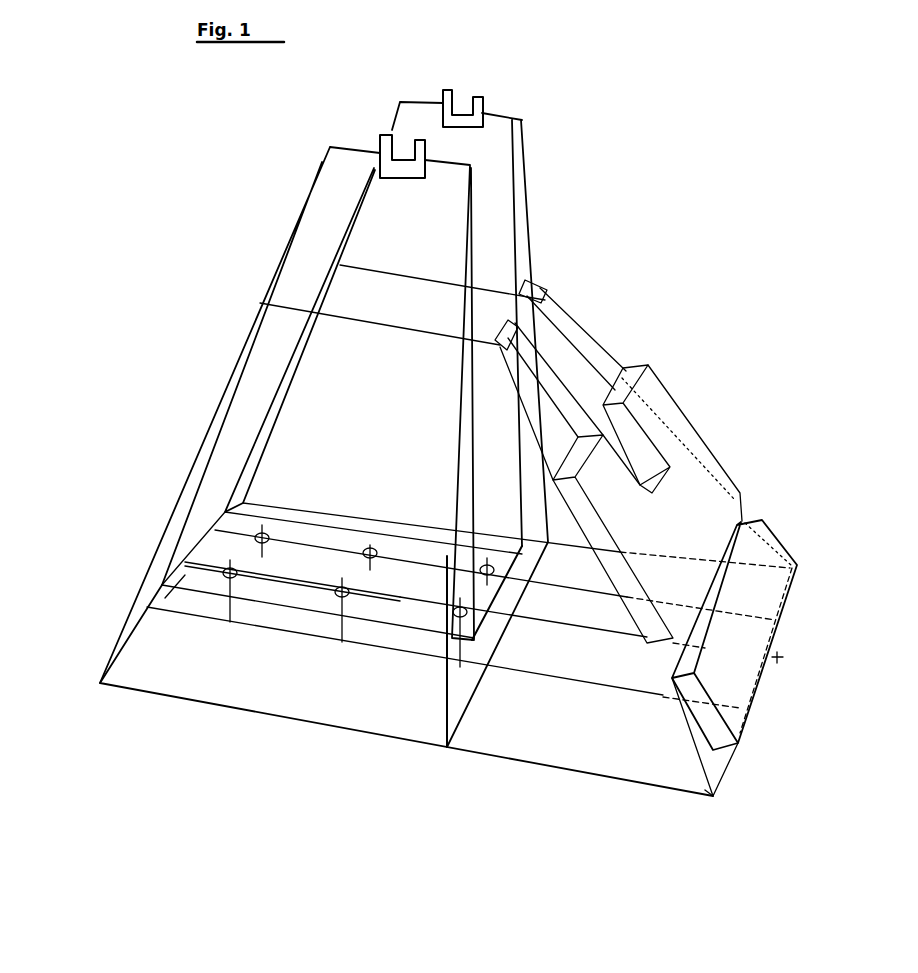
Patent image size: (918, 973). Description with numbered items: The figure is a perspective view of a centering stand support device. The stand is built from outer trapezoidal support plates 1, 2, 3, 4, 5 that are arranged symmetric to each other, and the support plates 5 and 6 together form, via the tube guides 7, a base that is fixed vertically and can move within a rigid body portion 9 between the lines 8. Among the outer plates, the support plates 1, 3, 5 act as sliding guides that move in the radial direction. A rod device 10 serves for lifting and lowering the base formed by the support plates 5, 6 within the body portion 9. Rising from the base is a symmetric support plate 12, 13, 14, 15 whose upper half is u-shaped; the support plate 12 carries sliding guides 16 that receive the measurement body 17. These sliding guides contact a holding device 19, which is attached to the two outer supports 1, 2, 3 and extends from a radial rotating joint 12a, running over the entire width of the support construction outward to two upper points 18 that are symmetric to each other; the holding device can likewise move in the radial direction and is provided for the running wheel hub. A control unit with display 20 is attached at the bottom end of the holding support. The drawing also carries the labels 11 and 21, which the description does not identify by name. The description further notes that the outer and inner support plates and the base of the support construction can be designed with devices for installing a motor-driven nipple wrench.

The outer trapezoidal support plate 1 is at (343, 732).
The outer trapezoidal support plate 2 is at (443, 720).
The outer trapezoidal support plate 3 is at (505, 112).
The outer trapezoidal support plate 4 is at (200, 485).
The support plate 5 is at (222, 573).
The support plate 6 is at (230, 572).
The tube guides 7 is at (230, 578).
The lines 8 is at (135, 633).
The rigid body portion 9 is at (263, 567).
The rod device 10 is at (542, 618).
The bracket 11 is at (482, 95).
The symmetric support plate 12 is at (728, 764).
The radial rotating joint 12a is at (715, 800).
The symmetric support plate 13 is at (677, 727).
The symmetric support plate 14 is at (527, 292).
The symmetric support plate 15 is at (555, 335).
The sliding guides 16 is at (586, 348).
The measurement body 17 is at (688, 512).
The upper points 18 is at (545, 292).
The holding device 19 is at (487, 290).
The control unit with display 20 is at (732, 673).
The hidden edges 21 is at (575, 597).